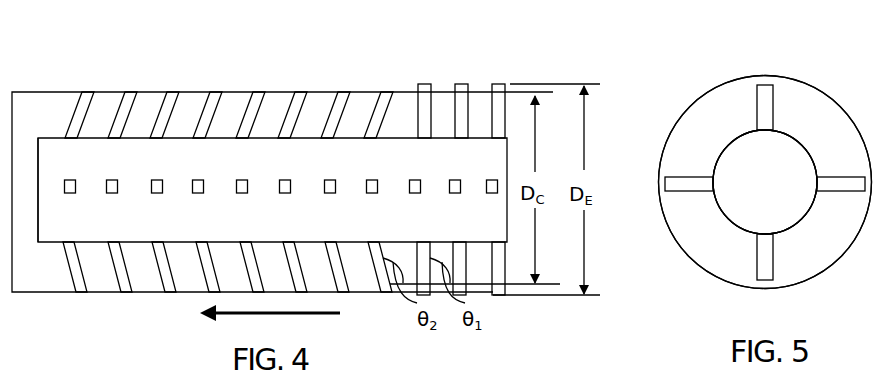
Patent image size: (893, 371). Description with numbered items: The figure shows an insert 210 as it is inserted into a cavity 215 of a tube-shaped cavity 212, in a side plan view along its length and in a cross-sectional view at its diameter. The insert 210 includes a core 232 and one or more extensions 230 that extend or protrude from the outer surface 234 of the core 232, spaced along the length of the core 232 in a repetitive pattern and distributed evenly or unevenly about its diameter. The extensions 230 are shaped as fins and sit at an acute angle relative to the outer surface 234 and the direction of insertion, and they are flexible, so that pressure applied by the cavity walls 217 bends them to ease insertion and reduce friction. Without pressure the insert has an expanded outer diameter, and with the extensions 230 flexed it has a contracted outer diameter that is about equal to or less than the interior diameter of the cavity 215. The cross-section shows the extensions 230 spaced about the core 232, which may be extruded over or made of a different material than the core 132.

In FIG. 5, the core 132 is at (790, 187).
In FIG. 4, the insert 210 is at (66, 148).
In FIG. 5, the insert 210 is at (805, 120).
In FIG. 5, the tube-shaped cavity 212 is at (671, 71).
In FIG. 4, the cavity 215 is at (152, 104).
In FIG. 5, the cavity 215 is at (717, 108).
In FIG. 4, the cavity walls 217 is at (392, 93).
In FIG. 4, the extensions 230 is at (257, 100).
In FIG. 5, the extensions 230 is at (757, 270).
In FIG. 4, the core 232 is at (80, 215).
In FIG. 4, the outer surface 234 is at (290, 227).
In FIG. 5, the outer surface 234 is at (787, 233).